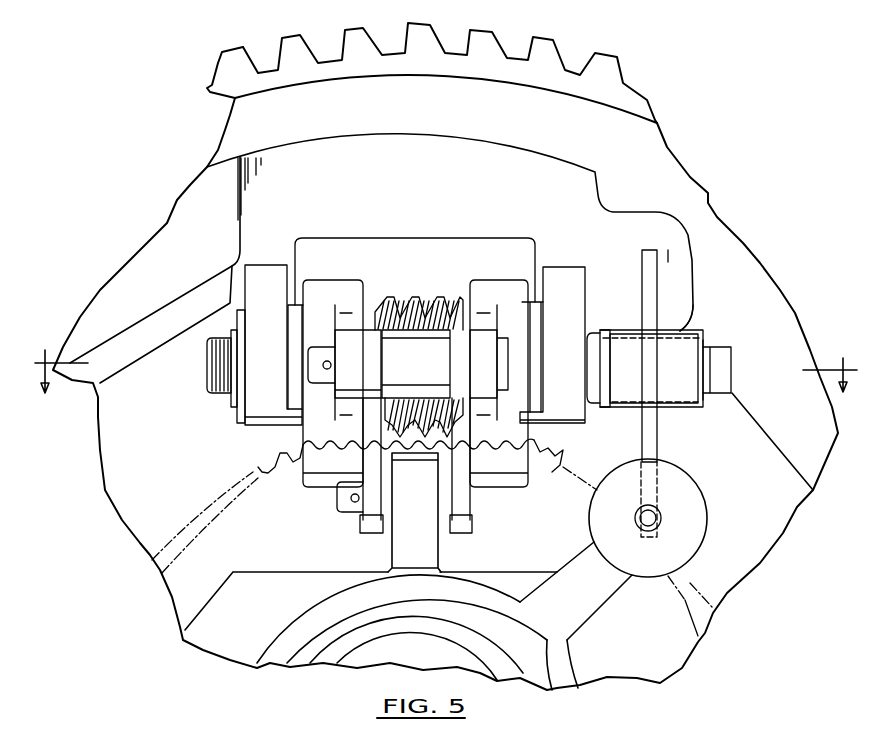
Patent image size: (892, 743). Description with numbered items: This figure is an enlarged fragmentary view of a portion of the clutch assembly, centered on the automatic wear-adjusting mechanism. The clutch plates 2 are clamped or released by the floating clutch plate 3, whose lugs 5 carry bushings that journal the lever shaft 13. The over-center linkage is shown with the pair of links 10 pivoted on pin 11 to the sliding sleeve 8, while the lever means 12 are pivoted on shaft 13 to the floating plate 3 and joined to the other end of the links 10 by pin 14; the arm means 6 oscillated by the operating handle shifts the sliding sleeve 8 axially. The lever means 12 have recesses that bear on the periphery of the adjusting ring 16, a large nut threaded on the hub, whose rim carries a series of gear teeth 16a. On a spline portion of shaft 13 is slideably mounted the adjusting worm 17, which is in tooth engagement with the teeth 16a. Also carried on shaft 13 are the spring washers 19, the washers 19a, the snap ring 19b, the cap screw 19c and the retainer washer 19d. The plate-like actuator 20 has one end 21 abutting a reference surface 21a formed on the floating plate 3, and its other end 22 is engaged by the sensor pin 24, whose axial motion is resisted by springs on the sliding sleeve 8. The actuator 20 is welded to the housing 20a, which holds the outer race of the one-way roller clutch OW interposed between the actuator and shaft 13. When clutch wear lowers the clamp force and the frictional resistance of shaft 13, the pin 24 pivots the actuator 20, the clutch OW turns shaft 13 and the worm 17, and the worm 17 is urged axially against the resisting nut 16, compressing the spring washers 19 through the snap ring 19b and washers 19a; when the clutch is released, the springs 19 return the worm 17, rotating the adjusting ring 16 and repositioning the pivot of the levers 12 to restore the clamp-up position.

The clutch plates 2 is at (620, 69).
The floating clutch plate 3 is at (412, 176).
The lugs 5 is at (272, 265).
The arm means 6 is at (443, 374).
The sliding sleeve 8 is at (398, 543).
The links 10 is at (373, 518).
The pin 11 is at (337, 502).
The lever means 12 is at (320, 280).
The lever shaft 13 is at (732, 378).
The pin 14 is at (320, 385).
The adjusting ring 16 is at (258, 467).
The gear teeth 16a is at (557, 456).
The adjusting worm 17 is at (410, 298).
The spring washers 19 is at (587, 398).
The washers 19a is at (237, 417).
The snap ring 19b is at (713, 340).
The cap screw 19c is at (205, 380).
The retainer washer 19d is at (233, 332).
The actuator 20 is at (674, 282).
The housing 20a is at (678, 332).
The end of actuator 21 is at (657, 258).
The reference surface 21a is at (672, 245).
The other end of actuator 22 is at (641, 537).
The sensor pin 24 is at (657, 515).
The one-way roller clutch OW is at (682, 403).